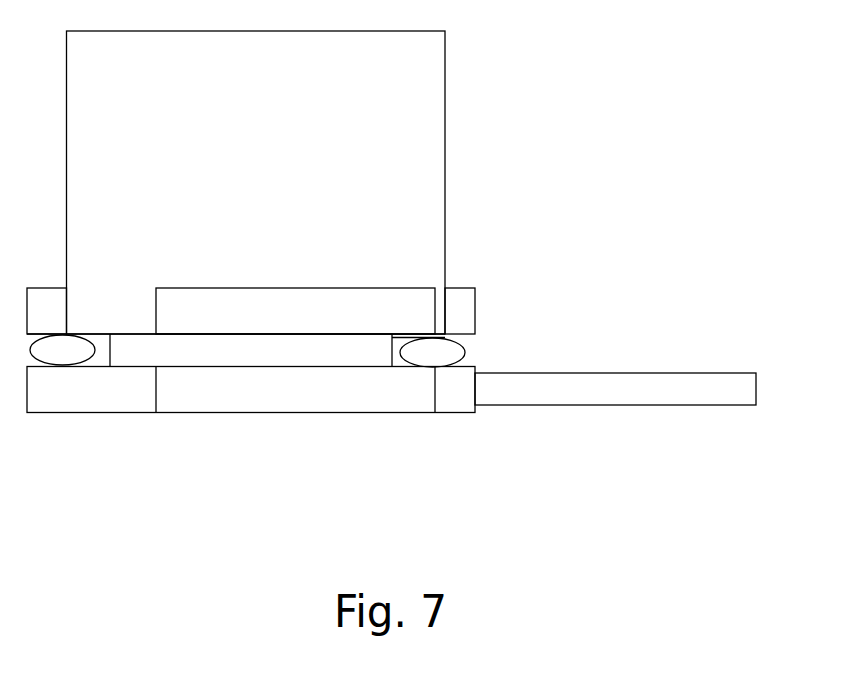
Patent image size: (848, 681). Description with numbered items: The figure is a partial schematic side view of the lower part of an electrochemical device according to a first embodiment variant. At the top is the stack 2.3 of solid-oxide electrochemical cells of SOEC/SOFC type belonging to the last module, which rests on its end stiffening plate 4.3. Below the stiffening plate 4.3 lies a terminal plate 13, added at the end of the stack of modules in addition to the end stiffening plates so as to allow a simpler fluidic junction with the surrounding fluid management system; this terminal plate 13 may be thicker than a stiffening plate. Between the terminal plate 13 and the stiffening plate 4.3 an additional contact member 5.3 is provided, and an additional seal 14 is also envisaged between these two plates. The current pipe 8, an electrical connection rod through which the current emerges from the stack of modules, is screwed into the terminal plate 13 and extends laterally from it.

The stack of electrochemical cells 2.3 is at (405, 142).
The stiffening plate 4.3 is at (352, 312).
The additional contact member 5.3 is at (127, 353).
The additional seal 14 is at (442, 353).
The terminal plate 13 is at (253, 400).
The current pipe 8 is at (627, 387).